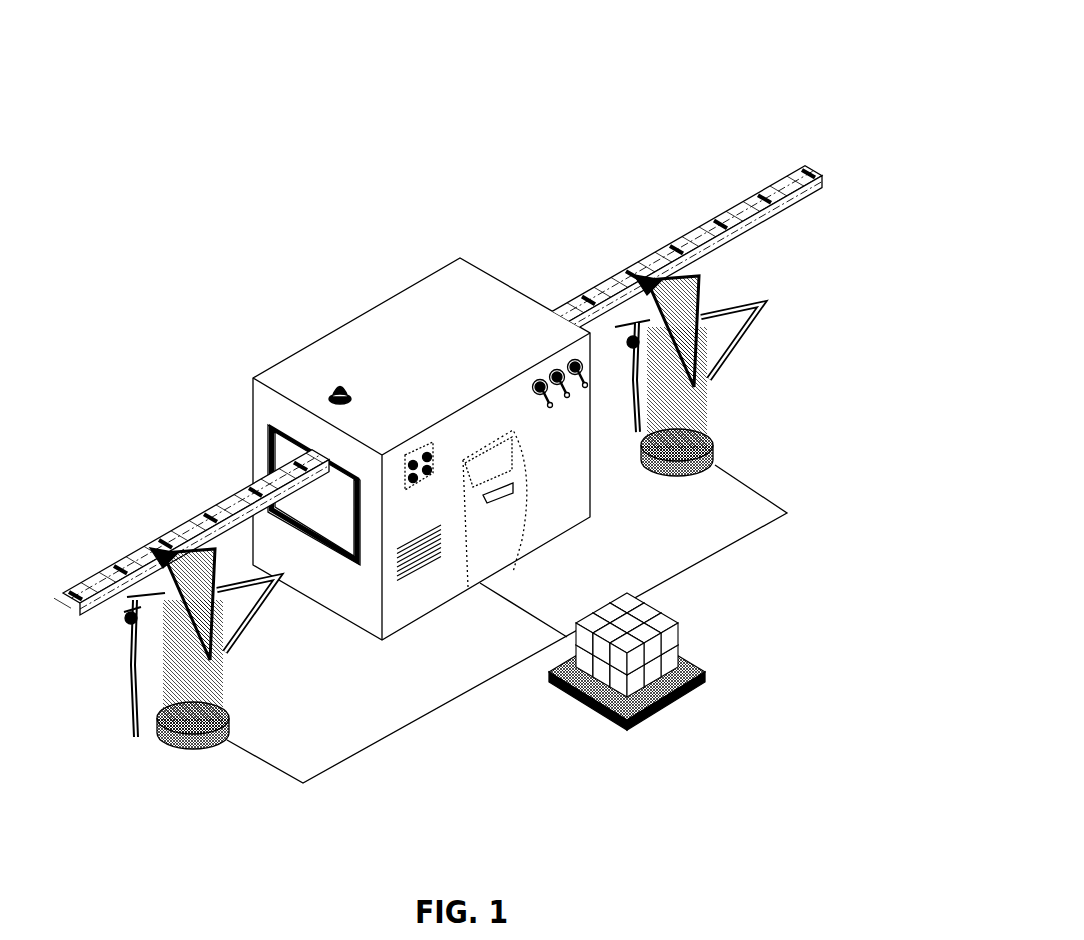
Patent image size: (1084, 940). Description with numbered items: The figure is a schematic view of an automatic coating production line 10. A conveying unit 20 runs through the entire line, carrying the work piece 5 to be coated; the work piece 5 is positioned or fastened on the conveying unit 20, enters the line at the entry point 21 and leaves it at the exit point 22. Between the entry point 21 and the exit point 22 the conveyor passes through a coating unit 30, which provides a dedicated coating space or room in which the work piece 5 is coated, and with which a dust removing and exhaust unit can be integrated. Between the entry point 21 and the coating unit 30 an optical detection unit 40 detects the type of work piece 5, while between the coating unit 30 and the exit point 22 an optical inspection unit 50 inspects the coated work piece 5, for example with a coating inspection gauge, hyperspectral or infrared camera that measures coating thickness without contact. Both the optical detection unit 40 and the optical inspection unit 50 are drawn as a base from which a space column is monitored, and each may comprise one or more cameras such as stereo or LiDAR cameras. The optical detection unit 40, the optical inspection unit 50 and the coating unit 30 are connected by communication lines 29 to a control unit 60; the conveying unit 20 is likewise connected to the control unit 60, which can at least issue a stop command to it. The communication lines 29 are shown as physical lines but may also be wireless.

The coating production line 10 is at (437, 133).
The work piece 5 is at (157, 633).
The conveying unit 20 is at (431, 381).
The entry point 21 is at (127, 570).
The exit point 22 is at (722, 216).
The communication lines 29 is at (523, 610).
The coating unit 30 is at (338, 348).
The optical detection unit 40 is at (171, 683).
The optical inspection unit 50 is at (707, 450).
The control unit 60 is at (673, 723).